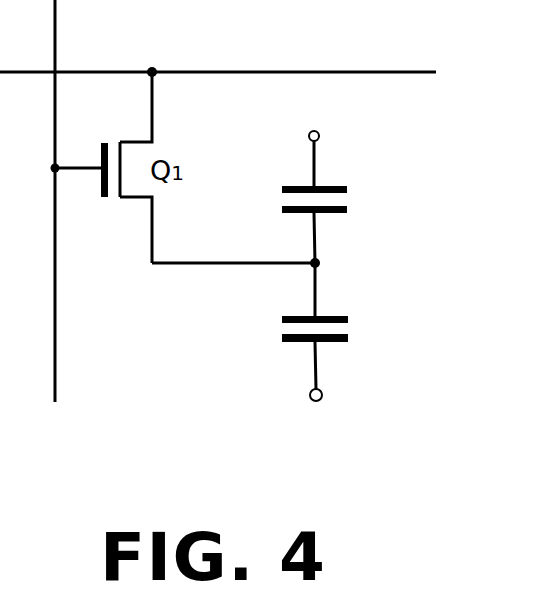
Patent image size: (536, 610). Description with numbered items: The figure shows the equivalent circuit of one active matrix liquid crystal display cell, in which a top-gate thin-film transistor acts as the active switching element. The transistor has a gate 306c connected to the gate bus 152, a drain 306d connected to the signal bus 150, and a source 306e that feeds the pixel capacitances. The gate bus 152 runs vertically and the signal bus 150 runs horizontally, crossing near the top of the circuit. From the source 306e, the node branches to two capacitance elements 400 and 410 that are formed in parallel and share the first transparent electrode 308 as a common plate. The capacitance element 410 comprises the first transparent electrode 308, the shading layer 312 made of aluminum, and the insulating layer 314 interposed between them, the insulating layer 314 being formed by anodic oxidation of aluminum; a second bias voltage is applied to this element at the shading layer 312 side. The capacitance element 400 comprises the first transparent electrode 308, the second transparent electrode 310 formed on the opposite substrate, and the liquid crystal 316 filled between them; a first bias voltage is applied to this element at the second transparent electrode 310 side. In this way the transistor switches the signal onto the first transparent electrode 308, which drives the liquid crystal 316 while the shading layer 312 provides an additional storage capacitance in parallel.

The signal bus 150 is at (378, 72).
The gate bus 152 is at (56, 15).
The gate 306c is at (100, 190).
The drain 306d is at (152, 142).
The source 306e is at (153, 198).
The capacitance element 410 is at (337, 188).
The shading layer 312 is at (340, 186).
The insulating layer 314 is at (347, 199).
The first transparent electrode 308 is at (337, 213).
The capacitance element 400 is at (307, 344).
The liquid crystal 316 is at (348, 328).
The second transparent electrode 310 is at (340, 342).